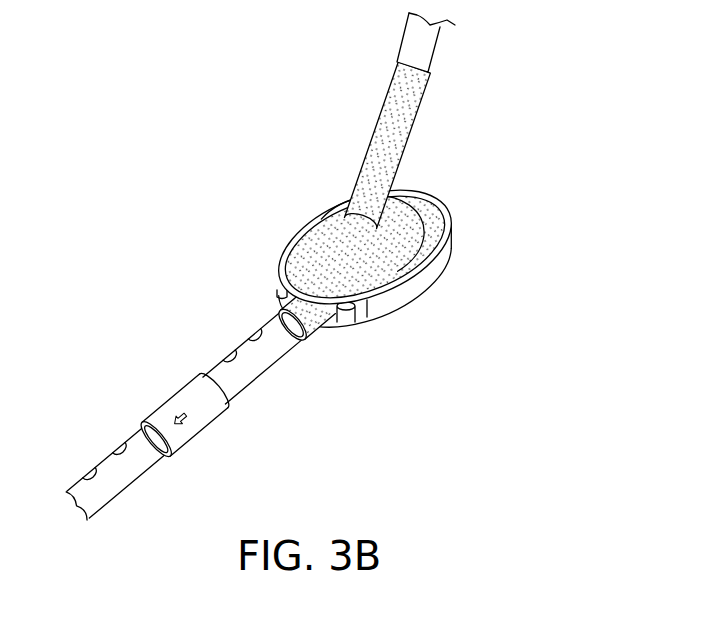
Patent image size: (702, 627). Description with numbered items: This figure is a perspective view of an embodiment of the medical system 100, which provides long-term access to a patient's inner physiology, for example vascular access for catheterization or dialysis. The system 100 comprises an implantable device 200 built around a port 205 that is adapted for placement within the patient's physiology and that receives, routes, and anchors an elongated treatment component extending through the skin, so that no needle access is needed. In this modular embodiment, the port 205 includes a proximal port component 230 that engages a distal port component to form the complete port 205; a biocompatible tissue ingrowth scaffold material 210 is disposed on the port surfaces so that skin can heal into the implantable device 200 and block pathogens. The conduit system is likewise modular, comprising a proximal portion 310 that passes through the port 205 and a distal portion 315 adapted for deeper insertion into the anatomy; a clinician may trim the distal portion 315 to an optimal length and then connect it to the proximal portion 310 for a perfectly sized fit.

The system 100 is at (133, 76).
The implantable device 200 is at (495, 257).
The port 205 is at (402, 295).
The tissue ingrowth scaffold material 210 is at (333, 282).
The proximal port component 230 is at (418, 212).
The proximal portion 310 is at (247, 354).
The distal portion 315 is at (120, 448).